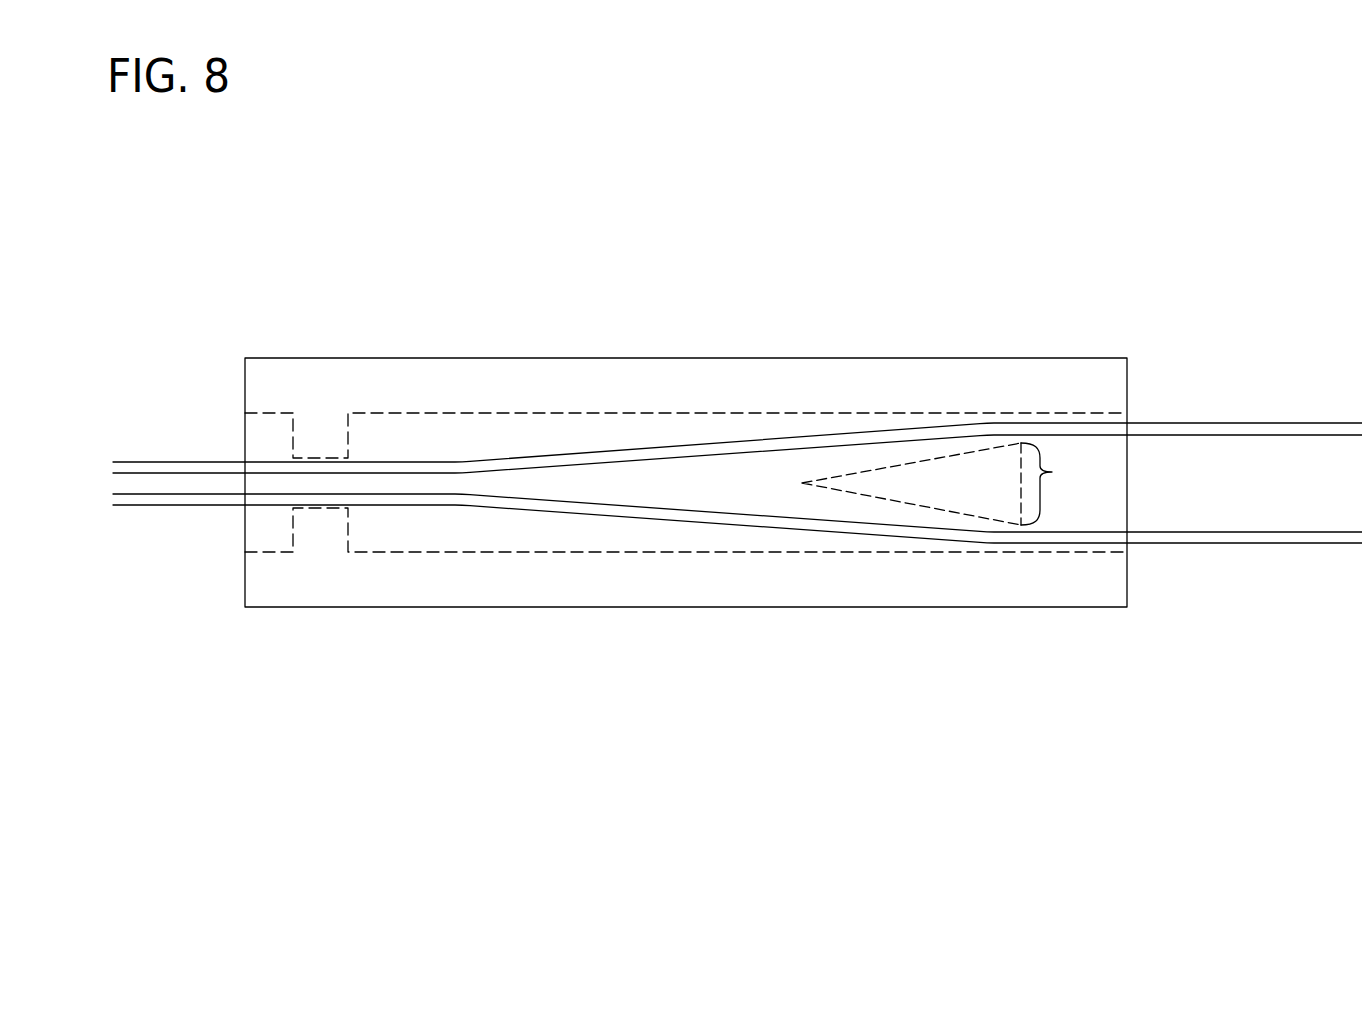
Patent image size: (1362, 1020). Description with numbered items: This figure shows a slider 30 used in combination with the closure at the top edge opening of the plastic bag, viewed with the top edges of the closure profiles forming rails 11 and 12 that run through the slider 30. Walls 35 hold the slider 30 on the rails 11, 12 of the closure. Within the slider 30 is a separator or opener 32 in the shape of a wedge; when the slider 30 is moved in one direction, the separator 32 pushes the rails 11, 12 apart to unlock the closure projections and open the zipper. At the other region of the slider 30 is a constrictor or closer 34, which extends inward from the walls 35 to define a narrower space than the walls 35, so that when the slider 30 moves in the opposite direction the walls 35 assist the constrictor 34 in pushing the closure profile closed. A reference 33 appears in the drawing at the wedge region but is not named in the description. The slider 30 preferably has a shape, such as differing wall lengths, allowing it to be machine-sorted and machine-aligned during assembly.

The rail 11 is at (1220, 543).
The rail 12 is at (1258, 424).
The slider 30 is at (448, 769).
The separator 32 is at (910, 503).
The core expansion region 33 is at (1059, 484).
The constrictor 34 is at (320, 508).
The walls 35 is at (492, 582).